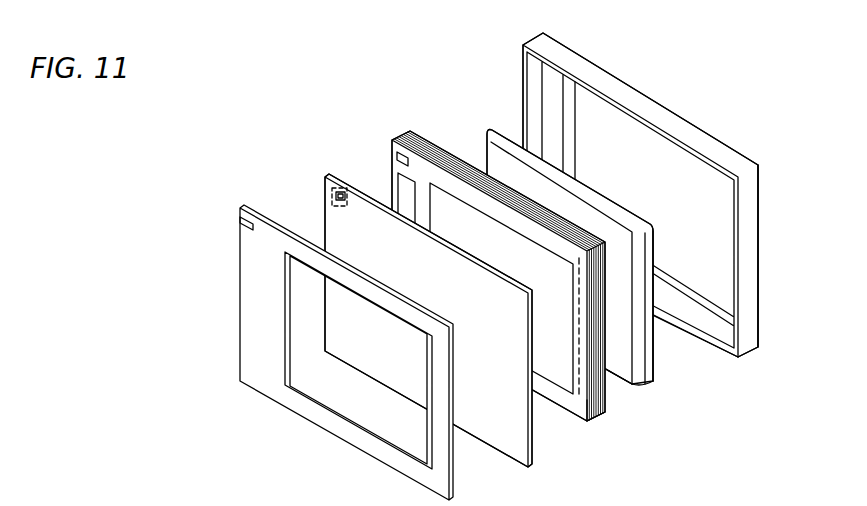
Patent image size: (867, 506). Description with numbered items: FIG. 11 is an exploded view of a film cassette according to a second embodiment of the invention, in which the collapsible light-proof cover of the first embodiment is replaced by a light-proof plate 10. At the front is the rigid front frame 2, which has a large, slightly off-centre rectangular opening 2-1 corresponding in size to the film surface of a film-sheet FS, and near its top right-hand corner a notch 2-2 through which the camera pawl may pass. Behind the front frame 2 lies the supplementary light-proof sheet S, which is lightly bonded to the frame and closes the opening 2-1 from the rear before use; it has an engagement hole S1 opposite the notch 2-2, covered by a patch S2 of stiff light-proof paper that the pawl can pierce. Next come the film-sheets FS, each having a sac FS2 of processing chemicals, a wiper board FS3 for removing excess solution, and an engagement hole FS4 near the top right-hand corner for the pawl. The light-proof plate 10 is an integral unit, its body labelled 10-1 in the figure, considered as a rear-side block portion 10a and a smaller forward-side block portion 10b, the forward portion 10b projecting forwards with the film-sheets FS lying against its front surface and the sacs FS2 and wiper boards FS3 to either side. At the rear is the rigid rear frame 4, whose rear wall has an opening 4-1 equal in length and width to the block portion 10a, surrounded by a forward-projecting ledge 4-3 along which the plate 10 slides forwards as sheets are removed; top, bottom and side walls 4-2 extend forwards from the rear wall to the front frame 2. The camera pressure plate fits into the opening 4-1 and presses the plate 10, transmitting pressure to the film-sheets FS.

The front frame 2 is at (296, 307).
The rectangular opening 2-1 is at (327, 400).
The notch 2-2 is at (243, 203).
The supplementary light-proof sheet S is at (398, 273).
The engagement hole S1 is at (336, 190).
The patch S2 is at (333, 200).
The film-sheet FS is at (497, 254).
The sac FS2 is at (403, 188).
The wiper board FS3 is at (597, 397).
The engagement hole FS4 is at (392, 140).
The light-proof plate 10 is at (606, 239).
The plate body 10-1 is at (650, 338).
The rear-side block portion 10a is at (650, 322).
The forward-side block portion 10b is at (625, 368).
The rear frame 4 is at (668, 189).
The opening 4-1 is at (664, 150).
The walls 4-2 is at (759, 182).
The ledge 4-3 is at (570, 95).